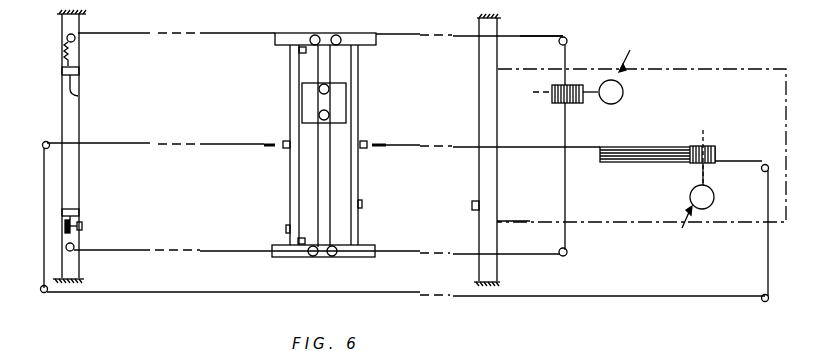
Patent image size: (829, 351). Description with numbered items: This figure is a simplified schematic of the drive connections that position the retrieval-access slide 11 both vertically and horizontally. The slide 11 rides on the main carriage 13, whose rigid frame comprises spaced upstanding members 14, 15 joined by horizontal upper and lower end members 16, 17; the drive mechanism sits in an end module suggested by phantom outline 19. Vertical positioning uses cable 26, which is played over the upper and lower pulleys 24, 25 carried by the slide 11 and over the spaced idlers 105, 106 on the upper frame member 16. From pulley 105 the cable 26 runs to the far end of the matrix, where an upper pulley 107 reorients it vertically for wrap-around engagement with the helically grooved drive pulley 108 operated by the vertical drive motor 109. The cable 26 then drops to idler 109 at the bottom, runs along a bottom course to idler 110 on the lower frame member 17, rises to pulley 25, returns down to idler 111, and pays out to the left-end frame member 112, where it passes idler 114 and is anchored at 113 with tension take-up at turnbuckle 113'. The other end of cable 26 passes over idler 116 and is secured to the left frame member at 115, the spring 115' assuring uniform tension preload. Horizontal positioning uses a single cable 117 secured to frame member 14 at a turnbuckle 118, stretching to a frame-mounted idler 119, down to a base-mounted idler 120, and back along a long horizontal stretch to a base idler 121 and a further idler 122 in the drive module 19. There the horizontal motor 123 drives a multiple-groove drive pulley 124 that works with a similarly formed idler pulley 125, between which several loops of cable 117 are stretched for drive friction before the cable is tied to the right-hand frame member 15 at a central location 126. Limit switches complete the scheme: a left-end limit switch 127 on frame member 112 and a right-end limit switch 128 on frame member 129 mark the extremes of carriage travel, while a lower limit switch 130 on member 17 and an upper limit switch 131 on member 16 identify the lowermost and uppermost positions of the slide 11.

The retrieval-access slide 11 is at (362, 96).
The main carriage 13 is at (291, 32).
The left carriage frame member 14 is at (290, 80).
The right carriage frame member 15 is at (360, 62).
The upper frame member 16 is at (370, 33).
The lower frame member 17 is at (372, 257).
The drive module 19 is at (790, 92).
The upper pulley 24 is at (330, 89).
The lower pulley 25 is at (318, 120).
The vertical positioning cable 26 is at (529, 36).
The idler 105 is at (340, 33).
The idler 106 is at (315, 33).
The upper pulley 107 is at (566, 39).
The drive pulley 108 is at (557, 102).
The vertical drive motor 109 is at (560, 249).
The idler 110 is at (326, 257).
The idler 111 is at (312, 257).
The left-end frame member 112 is at (75, 171).
The cable anchorage 113 is at (96, 198).
The turnbuckle 113' is at (118, 208).
The idler 114 is at (78, 245).
The cable end connection 115 is at (93, 86).
The spring 115' is at (100, 60).
The idler 116 is at (75, 42).
The horizontal positioning cable 117 is at (572, 283).
The turnbuckle 118 is at (270, 142).
The frame-mounted idler 119 is at (47, 142).
The base-mounted idler 120 is at (43, 292).
The base idler 121 is at (761, 295).
The idler 122 is at (766, 164).
The horizontal motor 123 is at (690, 197).
The multiple-groove drive pulley 124 is at (707, 146).
The multiple-groove idler pulley 125 is at (605, 165).
The central connection location 126 is at (366, 141).
The left-end limit switch 127 is at (82, 228).
The right-end limit switch 128 is at (472, 205).
The right-end frame member 129 is at (479, 162).
The lower limit switch 130 is at (302, 239).
The upper limit switch 131 is at (300, 54).